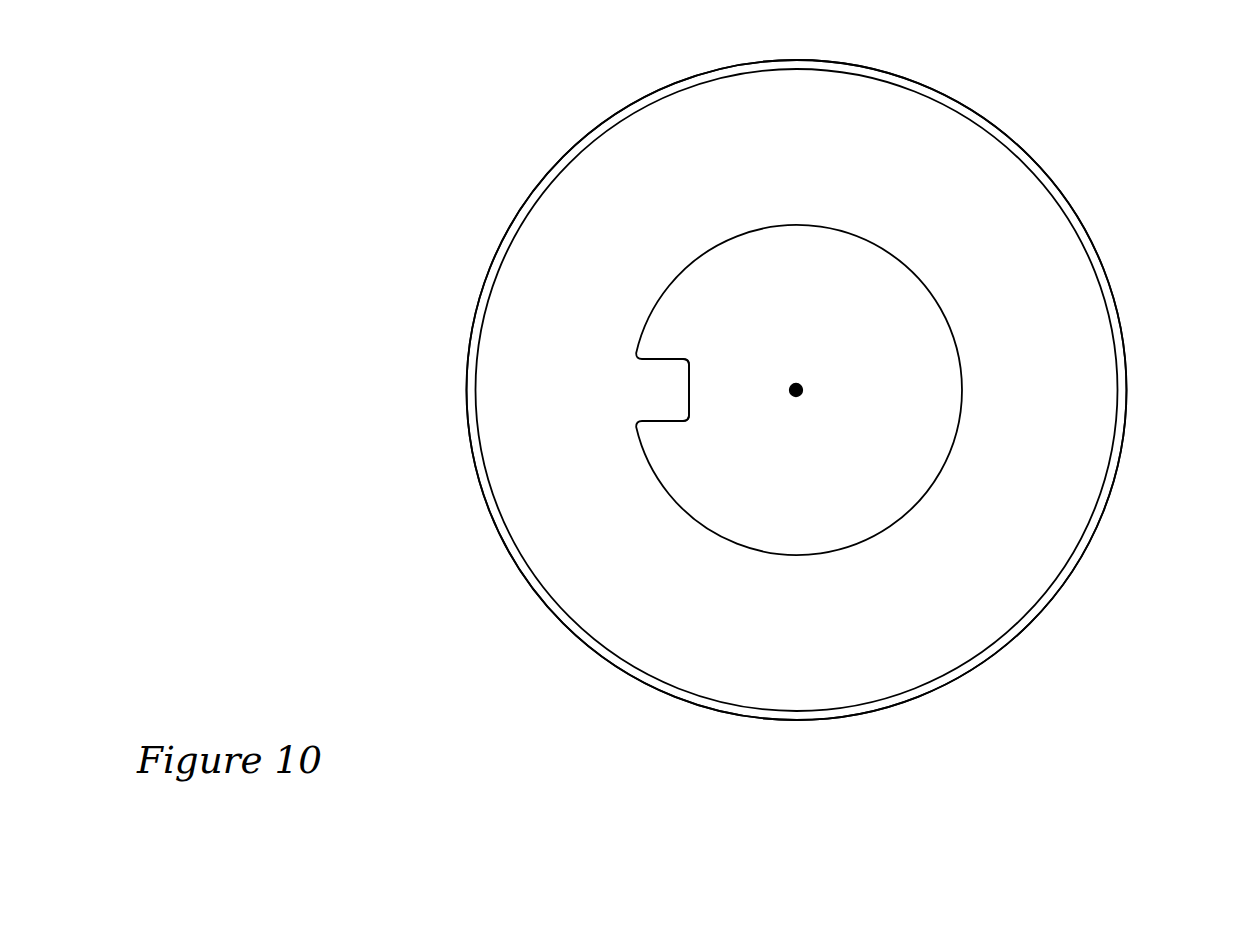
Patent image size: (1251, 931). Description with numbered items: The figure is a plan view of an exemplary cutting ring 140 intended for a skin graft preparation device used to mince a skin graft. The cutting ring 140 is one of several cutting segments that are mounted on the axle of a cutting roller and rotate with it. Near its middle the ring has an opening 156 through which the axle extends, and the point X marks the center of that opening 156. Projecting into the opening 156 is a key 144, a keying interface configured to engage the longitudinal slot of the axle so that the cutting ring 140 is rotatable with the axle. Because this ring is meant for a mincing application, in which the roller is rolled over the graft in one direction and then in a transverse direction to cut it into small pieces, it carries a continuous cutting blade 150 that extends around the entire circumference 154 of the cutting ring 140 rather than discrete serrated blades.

The cutting ring 140 is at (1140, 90).
The continuous cutting blade 150 is at (525, 578).
The circumference 154 is at (1072, 570).
The opening 156 is at (950, 447).
The key 144 is at (689, 399).
The center axis point X is at (802, 385).